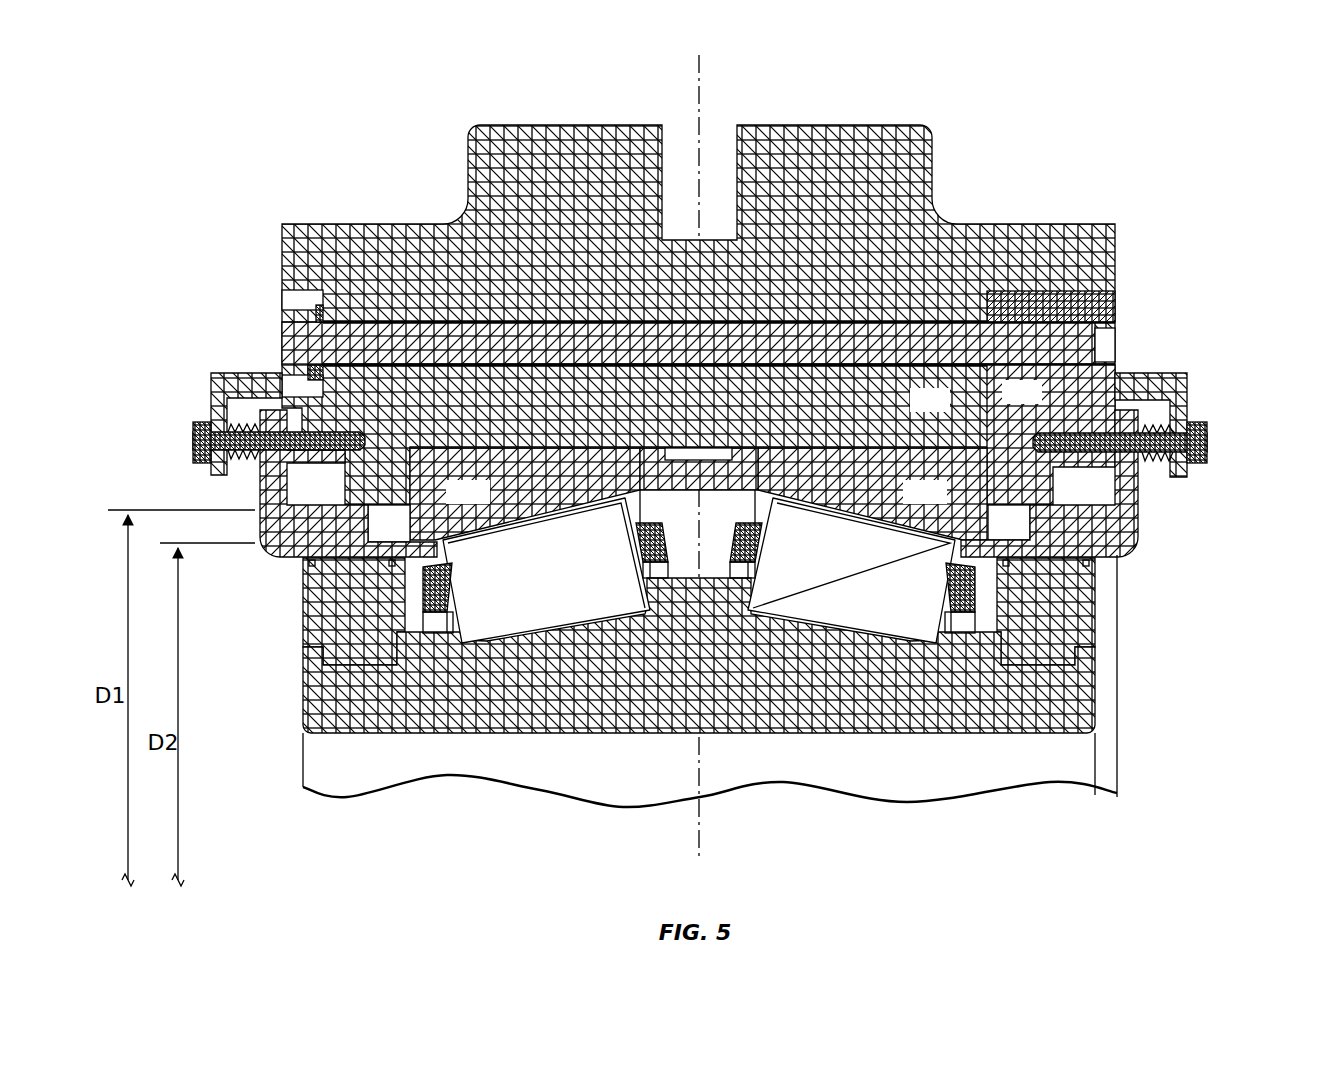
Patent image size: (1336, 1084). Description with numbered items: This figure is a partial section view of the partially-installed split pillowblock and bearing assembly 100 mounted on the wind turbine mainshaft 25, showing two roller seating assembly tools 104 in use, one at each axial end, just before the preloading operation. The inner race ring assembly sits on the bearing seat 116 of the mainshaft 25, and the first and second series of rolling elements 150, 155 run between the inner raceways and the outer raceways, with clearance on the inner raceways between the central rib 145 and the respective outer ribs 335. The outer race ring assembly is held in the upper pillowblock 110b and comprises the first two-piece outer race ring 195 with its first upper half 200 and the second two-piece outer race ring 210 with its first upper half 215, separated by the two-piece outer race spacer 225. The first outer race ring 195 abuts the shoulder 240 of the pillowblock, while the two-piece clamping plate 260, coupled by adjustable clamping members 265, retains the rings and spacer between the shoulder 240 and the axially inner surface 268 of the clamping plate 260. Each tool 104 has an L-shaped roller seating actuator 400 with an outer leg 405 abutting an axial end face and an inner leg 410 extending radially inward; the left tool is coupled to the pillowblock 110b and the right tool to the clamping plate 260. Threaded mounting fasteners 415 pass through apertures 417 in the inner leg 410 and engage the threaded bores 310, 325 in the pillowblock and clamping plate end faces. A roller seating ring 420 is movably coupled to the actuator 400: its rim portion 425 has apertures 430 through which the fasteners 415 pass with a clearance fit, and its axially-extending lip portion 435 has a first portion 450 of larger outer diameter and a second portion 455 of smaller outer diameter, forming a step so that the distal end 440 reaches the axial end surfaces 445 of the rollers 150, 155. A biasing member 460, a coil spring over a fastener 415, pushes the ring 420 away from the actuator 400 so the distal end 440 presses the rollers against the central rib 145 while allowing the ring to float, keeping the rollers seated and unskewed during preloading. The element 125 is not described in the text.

The wind turbine mainshaft 25 is at (871, 774).
The split pillowblock and bearing assembly 100 is at (1138, 160).
The assembly tool 104 is at (150, 357).
The upper pillowblock 110b is at (862, 145).
The bearing seat 116 is at (647, 720).
The inner ring hub 125 is at (342, 726).
The central rib 145 is at (645, 612).
The first series of rolling elements 150 is at (525, 580).
The second series of rolling elements 155 is at (829, 580).
The first two-piece outer race ring 195 is at (517, 480).
The first upper half 200 is at (517, 480).
The second two-piece outer race ring 210 is at (853, 473).
The first upper half 215 is at (853, 473).
The two-piece outer race spacer 225 is at (743, 470).
The shoulder 240 is at (427, 478).
The two-piece clamping plate 260 is at (1090, 302).
The adjustable clamping members 265 is at (300, 322).
The axially inner surface 268 is at (983, 467).
The threaded bores 310 is at (307, 356).
The threaded bores 325 is at (1078, 432).
The outer ribs 335 is at (493, 642).
The roller seating actuator 400 is at (232, 405).
The outer leg 405 is at (1143, 375).
The inner leg 410 is at (1190, 413).
The threaded mounting fasteners 415 is at (198, 440).
The apertures 417 is at (1187, 446).
The roller seating ring 420 is at (325, 500).
The rim portion 425 is at (1142, 500).
The apertures 430 is at (1135, 520).
The axially-extending lip portion 435 is at (1090, 600).
The distal end 440 is at (445, 537).
The axial end surfaces 445 is at (425, 592).
The first portion 450 is at (413, 560).
The second portion 455 is at (410, 566).
The biasing member 460 is at (244, 428).